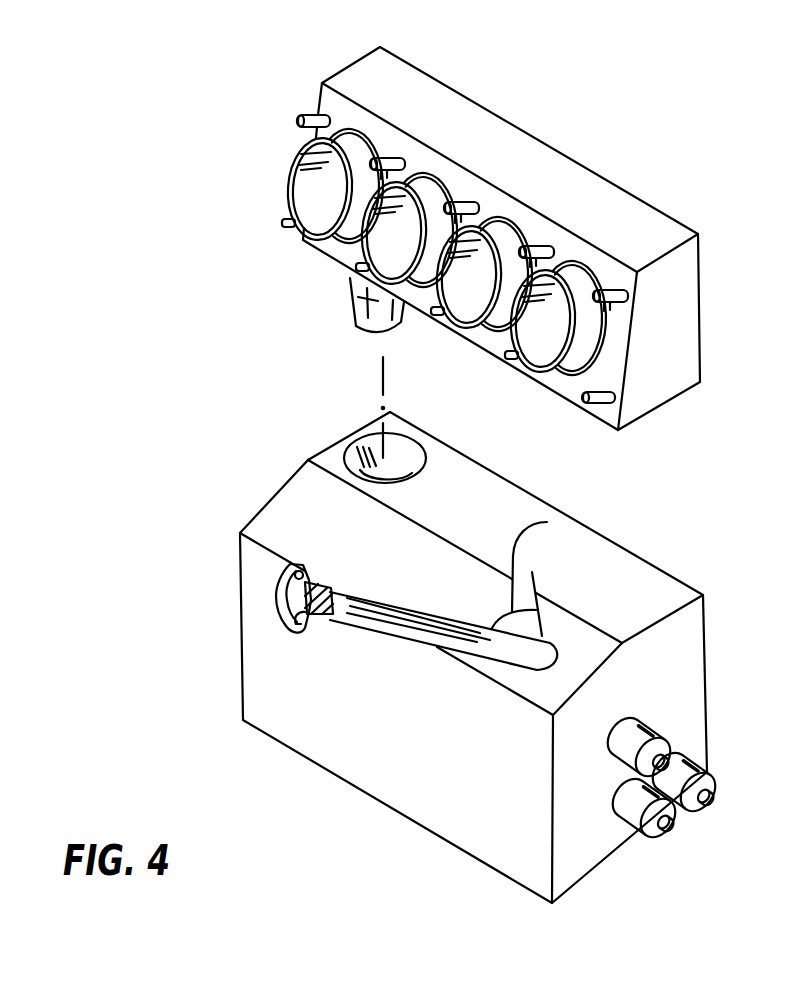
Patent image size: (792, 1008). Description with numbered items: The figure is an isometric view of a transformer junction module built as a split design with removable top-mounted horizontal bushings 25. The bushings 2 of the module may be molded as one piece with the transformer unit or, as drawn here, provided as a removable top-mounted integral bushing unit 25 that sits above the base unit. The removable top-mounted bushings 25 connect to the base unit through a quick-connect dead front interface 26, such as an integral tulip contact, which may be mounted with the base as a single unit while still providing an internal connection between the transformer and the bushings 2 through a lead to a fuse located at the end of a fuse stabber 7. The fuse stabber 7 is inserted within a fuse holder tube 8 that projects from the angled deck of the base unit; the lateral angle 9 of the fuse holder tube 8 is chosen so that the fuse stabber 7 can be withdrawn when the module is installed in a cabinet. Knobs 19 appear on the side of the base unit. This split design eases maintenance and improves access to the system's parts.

The removable top-mounted horizontal bushings 25 is at (365, 72).
The bushings 2 is at (432, 198).
The quick-connect dead front interface 26 is at (350, 292).
The lateral angle 9 is at (547, 522).
The fuse holder tube 8 is at (408, 633).
The fuse stabber 7 is at (323, 617).
The adjusting knobs 19 is at (717, 782).